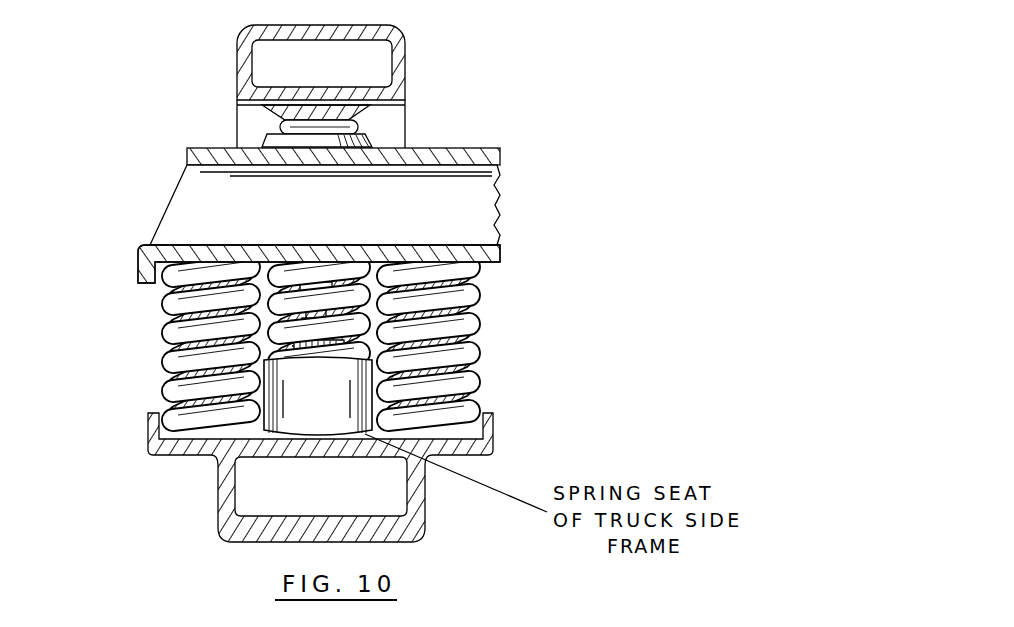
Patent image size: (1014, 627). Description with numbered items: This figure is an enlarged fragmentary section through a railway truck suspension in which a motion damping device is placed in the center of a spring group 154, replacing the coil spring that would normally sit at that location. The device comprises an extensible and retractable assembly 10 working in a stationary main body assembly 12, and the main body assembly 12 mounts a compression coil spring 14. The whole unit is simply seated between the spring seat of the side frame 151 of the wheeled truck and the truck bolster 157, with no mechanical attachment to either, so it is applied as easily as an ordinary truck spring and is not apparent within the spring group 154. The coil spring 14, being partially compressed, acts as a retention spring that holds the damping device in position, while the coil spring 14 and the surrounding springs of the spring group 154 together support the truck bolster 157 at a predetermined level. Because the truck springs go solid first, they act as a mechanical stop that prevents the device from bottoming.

The side frame 151 is at (392, 125).
The truck bolster 157 is at (208, 206).
The compression coil spring 14 is at (295, 295).
The extensible and retractable assembly 10 is at (378, 311).
The main body assembly 12 is at (331, 408).
The spring group 154 is at (146, 385).